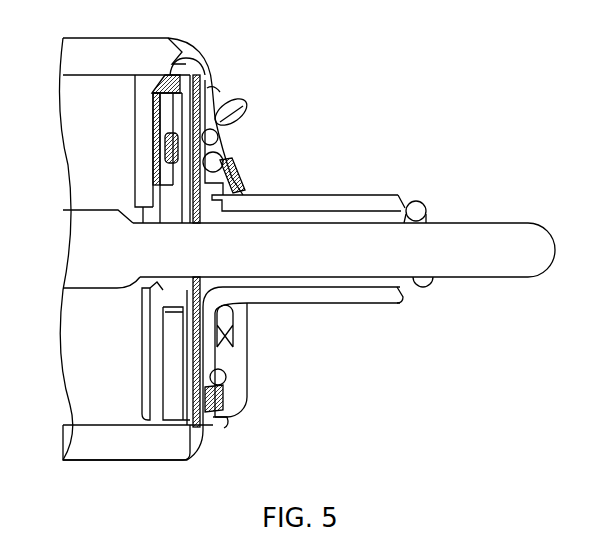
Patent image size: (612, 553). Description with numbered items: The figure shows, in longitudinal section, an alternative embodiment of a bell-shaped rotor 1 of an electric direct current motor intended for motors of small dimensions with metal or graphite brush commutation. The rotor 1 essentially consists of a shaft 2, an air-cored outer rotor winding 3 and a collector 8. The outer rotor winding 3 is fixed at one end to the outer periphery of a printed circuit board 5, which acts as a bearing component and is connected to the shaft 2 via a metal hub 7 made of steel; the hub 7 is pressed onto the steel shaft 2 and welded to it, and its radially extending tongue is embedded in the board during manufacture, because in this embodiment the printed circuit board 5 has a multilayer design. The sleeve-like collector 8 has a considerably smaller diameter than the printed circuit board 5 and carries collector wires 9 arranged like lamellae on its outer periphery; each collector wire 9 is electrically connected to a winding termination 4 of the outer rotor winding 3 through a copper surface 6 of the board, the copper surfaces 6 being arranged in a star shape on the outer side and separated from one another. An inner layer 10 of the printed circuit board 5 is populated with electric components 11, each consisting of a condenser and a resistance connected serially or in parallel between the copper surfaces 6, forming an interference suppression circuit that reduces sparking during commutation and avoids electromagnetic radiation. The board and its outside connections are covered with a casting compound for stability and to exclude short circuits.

The rotor 1 is at (504, 94).
The shaft 2 is at (513, 263).
The outer rotor winding 3 is at (193, 450).
The winding termination 4 is at (247, 110).
The printed circuit board 5 is at (130, 371).
The copper surface 6 is at (218, 92).
The metal hub 7 is at (147, 293).
The collector 8 is at (415, 201).
The collector wire 9 is at (351, 203).
The inner layer 10 is at (148, 422).
The electric component 11 is at (165, 150).